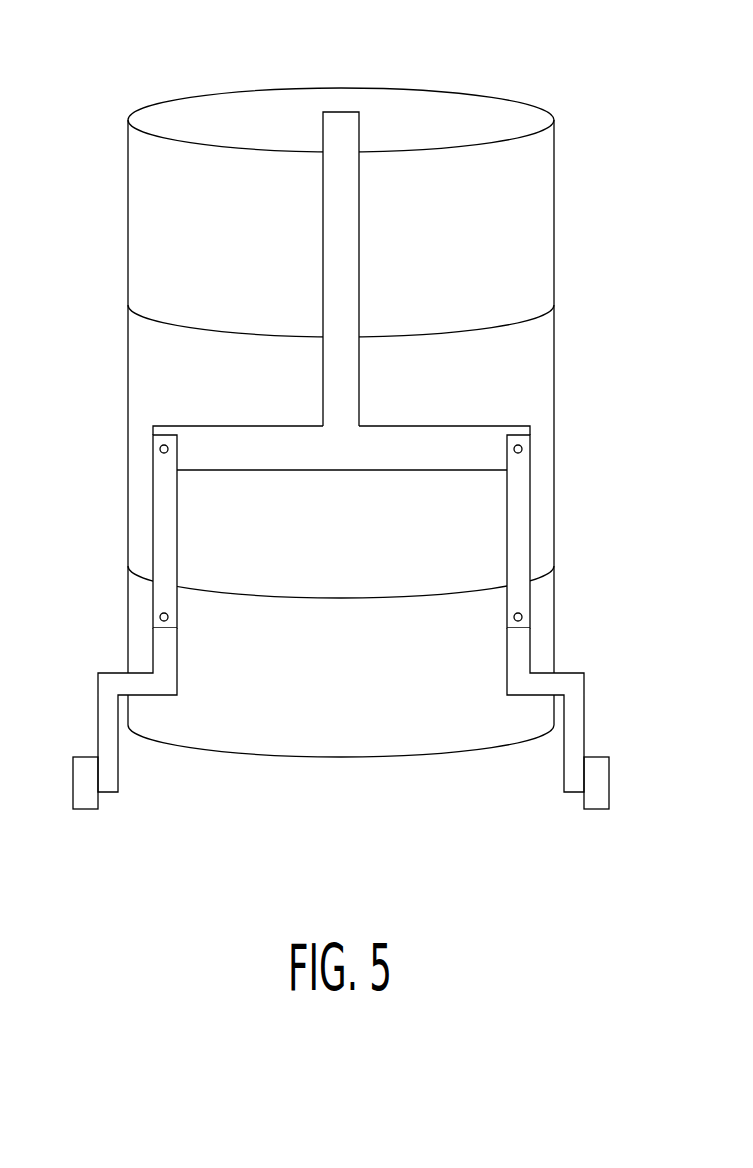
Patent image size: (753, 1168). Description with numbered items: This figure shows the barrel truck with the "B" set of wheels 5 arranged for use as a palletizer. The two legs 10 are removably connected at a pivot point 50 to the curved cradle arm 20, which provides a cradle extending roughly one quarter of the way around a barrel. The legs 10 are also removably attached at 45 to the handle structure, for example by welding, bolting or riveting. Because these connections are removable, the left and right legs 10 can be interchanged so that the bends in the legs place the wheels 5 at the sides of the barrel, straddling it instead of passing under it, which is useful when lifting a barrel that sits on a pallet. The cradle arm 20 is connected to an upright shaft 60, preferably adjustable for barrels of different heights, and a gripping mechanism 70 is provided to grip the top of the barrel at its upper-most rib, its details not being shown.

The wheels 5 is at (600, 762).
The legs 10 is at (520, 525).
The cradle arm 20 is at (195, 442).
The connection point 45 is at (520, 617).
The pivot point 50 is at (522, 449).
The upright shaft 60 is at (334, 220).
The gripping mechanism 70 is at (342, 122).